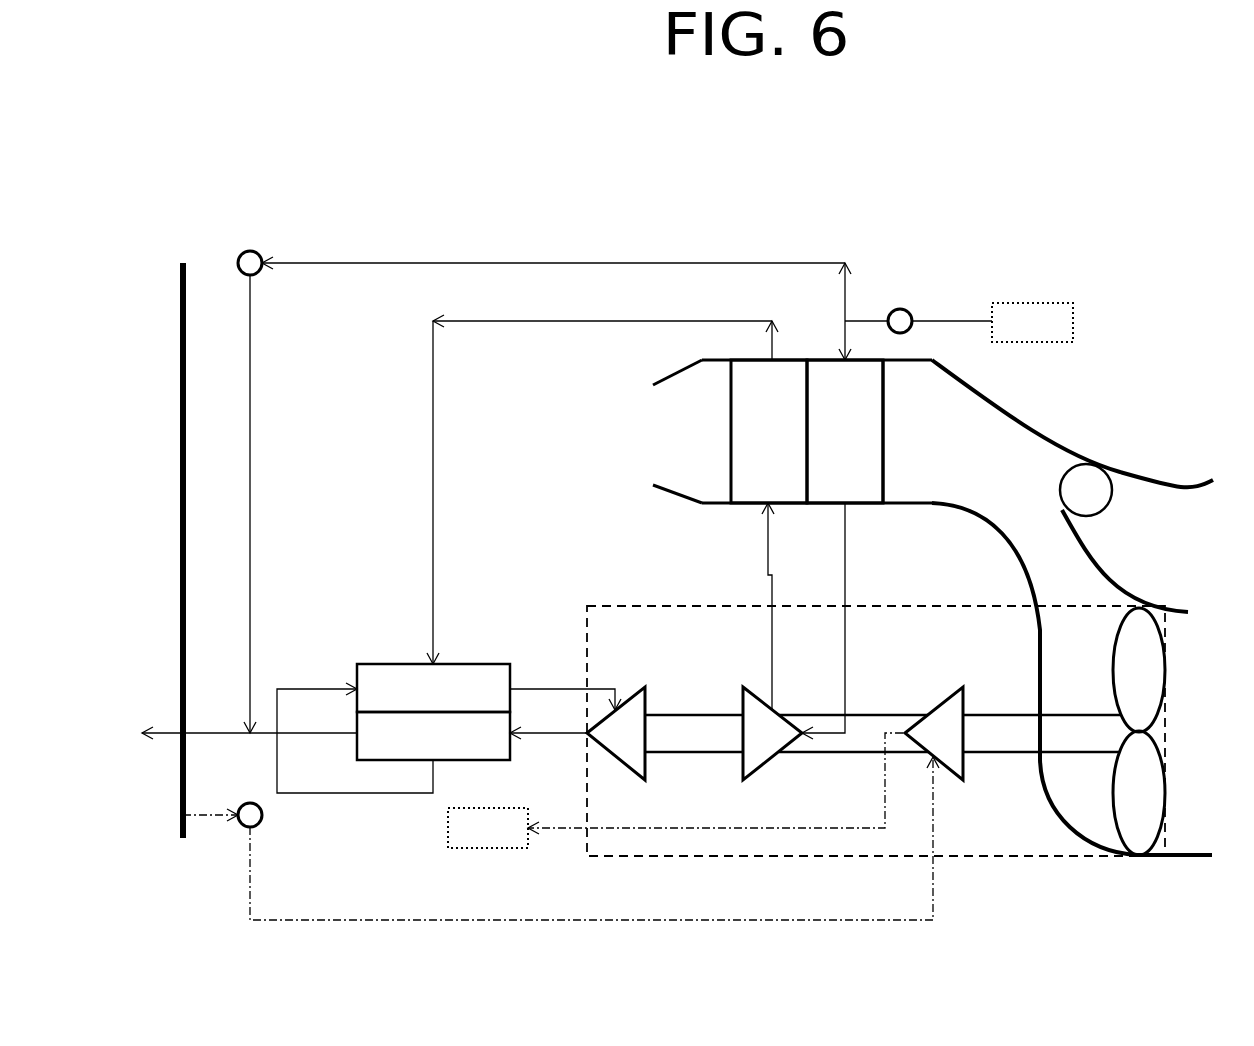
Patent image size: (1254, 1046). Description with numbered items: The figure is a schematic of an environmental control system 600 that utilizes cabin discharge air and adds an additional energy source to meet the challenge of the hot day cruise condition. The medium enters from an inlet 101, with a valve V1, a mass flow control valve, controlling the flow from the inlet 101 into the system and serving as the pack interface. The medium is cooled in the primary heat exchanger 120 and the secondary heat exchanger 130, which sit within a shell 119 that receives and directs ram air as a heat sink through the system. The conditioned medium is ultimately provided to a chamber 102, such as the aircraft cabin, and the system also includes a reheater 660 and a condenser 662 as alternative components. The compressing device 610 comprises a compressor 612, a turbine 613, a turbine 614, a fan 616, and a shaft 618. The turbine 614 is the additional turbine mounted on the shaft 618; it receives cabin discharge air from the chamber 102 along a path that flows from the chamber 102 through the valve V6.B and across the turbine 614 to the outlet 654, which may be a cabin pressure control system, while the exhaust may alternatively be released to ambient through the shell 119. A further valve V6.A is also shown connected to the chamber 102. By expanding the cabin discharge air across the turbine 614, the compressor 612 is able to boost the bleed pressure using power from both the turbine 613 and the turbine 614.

The environmental control system 600 is at (335, 117).
The chamber 102 is at (178, 263).
The valve V6.A is at (240, 257).
The valve V1 is at (892, 314).
The inlet 101 is at (992, 322).
The secondary heat exchanger 130 is at (752, 445).
The primary heat exchanger 120 is at (827, 445).
The shell 119 is at (1085, 453).
The reheater 660 is at (413, 702).
The condenser 662 is at (413, 750).
The valve V6.B is at (240, 806).
The outlet 654 is at (488, 828).
The compressing device 610 is at (682, 857).
The turbine 613 is at (608, 745).
The compressor 612 is at (745, 745).
The turbine 614 is at (922, 745).
The shaft 618 is at (980, 754).
The fan 616 is at (1095, 788).